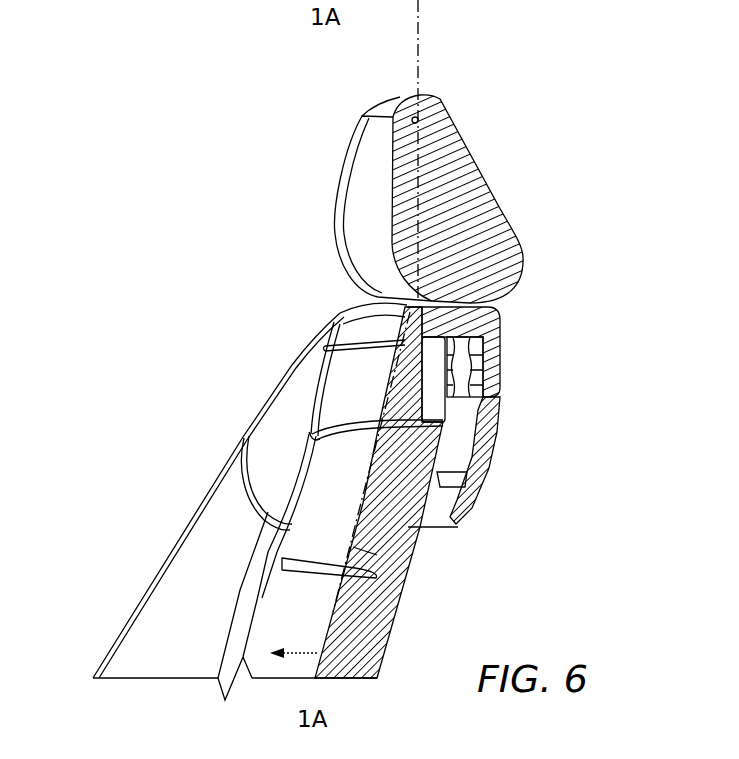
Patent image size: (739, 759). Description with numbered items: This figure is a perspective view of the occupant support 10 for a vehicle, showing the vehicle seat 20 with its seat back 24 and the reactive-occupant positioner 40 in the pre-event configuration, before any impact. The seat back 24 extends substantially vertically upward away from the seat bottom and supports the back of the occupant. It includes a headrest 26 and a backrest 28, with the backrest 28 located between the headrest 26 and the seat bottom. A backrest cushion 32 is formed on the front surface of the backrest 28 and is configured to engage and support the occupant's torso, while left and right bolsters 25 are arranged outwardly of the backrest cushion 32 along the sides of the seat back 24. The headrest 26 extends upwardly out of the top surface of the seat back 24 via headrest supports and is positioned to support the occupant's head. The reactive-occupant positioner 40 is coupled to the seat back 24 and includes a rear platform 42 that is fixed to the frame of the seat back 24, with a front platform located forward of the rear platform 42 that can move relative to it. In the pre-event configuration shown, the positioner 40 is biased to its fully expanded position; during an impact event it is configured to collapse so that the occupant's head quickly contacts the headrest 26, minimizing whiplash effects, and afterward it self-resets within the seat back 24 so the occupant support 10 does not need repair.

The occupant support 10 is at (164, 159).
The vehicle seat 20 is at (535, 198).
The seat back 24 is at (492, 452).
The bolster 25 is at (178, 580).
The headrest 26 is at (462, 164).
The backrest 28 is at (340, 627).
The backrest cushion 32 is at (392, 555).
The reactive-occupant positioner 40 is at (500, 320).
The rear platform 42 is at (473, 370).